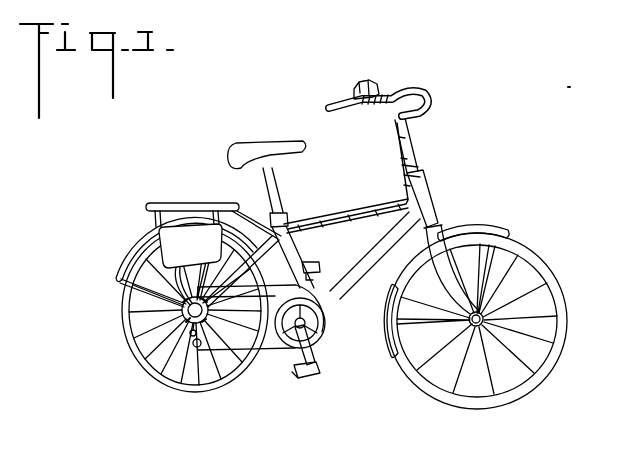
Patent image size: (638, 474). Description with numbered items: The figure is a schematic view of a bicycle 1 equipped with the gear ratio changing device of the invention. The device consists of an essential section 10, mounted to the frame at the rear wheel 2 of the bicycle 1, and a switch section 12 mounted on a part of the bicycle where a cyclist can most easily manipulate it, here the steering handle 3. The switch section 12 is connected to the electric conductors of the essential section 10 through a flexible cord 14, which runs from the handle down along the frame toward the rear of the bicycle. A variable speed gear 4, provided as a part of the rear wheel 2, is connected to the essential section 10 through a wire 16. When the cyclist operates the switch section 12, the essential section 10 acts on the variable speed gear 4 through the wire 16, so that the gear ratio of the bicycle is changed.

The bicycle 1 is at (443, 196).
The rear wheel 2 is at (123, 299).
The steering handle 3 is at (426, 95).
The variable speed gear 4 is at (191, 343).
The essential section 10 is at (168, 233).
The switch section 12 is at (375, 88).
The flexible cord 14 is at (343, 208).
The wire 16 is at (181, 314).